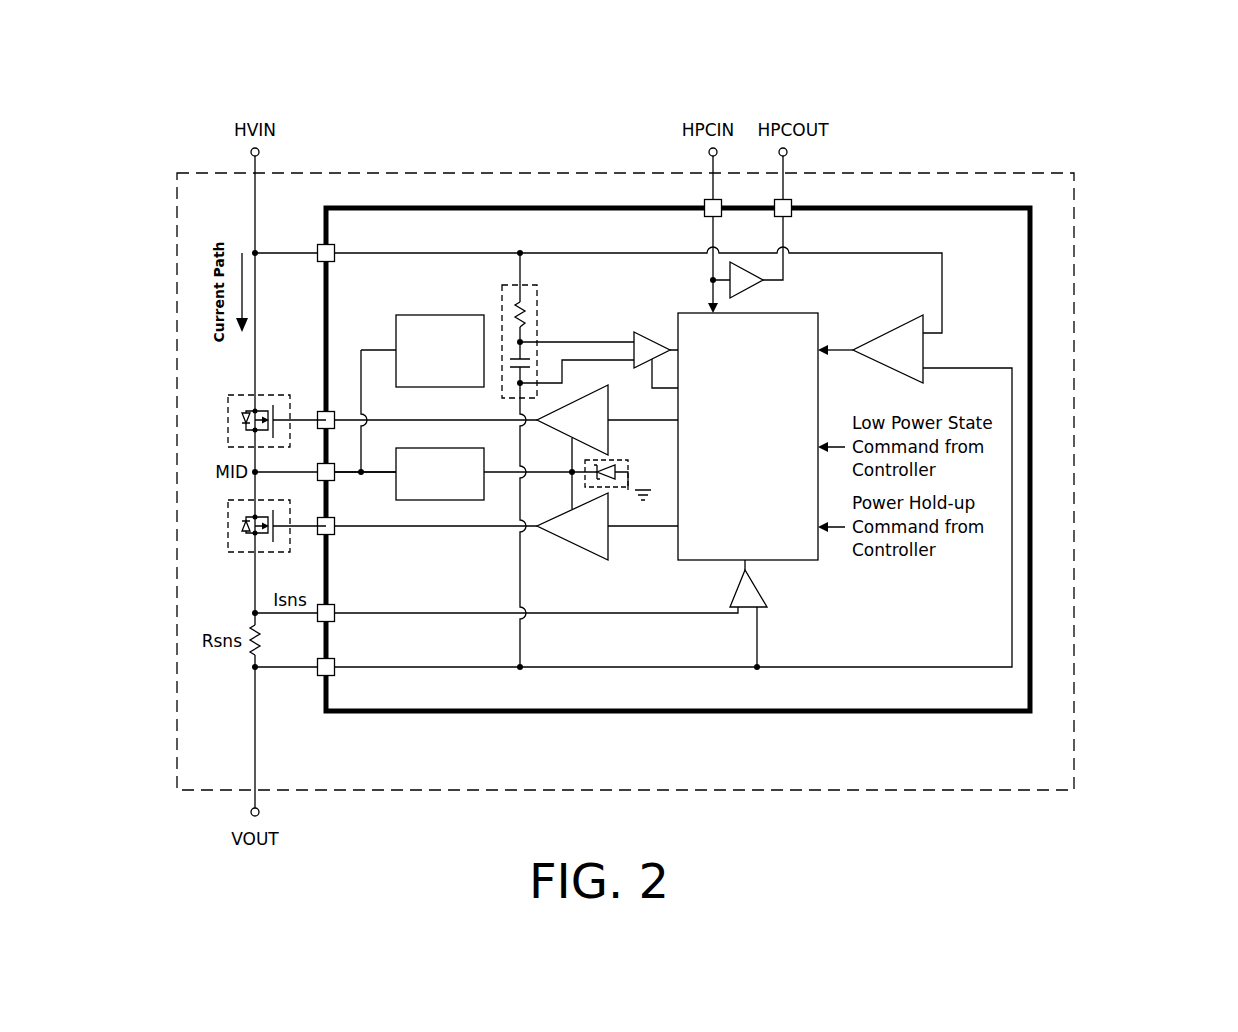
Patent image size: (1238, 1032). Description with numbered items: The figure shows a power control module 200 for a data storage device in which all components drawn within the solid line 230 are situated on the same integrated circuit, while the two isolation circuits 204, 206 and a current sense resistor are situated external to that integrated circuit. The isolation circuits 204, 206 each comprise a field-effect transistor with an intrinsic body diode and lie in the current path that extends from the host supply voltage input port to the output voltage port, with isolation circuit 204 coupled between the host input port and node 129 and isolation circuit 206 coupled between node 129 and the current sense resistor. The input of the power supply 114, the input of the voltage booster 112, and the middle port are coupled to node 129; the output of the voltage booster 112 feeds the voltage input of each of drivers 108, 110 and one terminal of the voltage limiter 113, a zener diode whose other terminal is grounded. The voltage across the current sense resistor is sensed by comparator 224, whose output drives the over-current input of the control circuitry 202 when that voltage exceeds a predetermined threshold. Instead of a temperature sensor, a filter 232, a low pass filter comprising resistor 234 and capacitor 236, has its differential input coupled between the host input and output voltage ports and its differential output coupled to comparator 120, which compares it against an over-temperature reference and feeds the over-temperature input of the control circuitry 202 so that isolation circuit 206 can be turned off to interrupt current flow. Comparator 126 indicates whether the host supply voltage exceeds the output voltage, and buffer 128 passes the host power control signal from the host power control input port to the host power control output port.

The power control module 200 is at (1140, 105).
The control circuitry 202 is at (748, 436).
The isolation circuit 204 is at (241, 393).
The isolation circuit 206 is at (250, 553).
The driver 108 is at (608, 397).
The driver 110 is at (588, 553).
The voltage booster 112 is at (453, 448).
The voltage limiter 113 is at (618, 458).
The power supply 114 is at (435, 315).
The comparator 120 is at (648, 334).
The comparator 126 is at (896, 331).
The buffer 128 is at (746, 291).
The node 129 is at (361, 476).
The comparator 224 is at (762, 592).
The solid line 230 is at (658, 709).
The filter 232 is at (538, 325).
The resistor 234 is at (519, 305).
The capacitor 236 is at (515, 370).